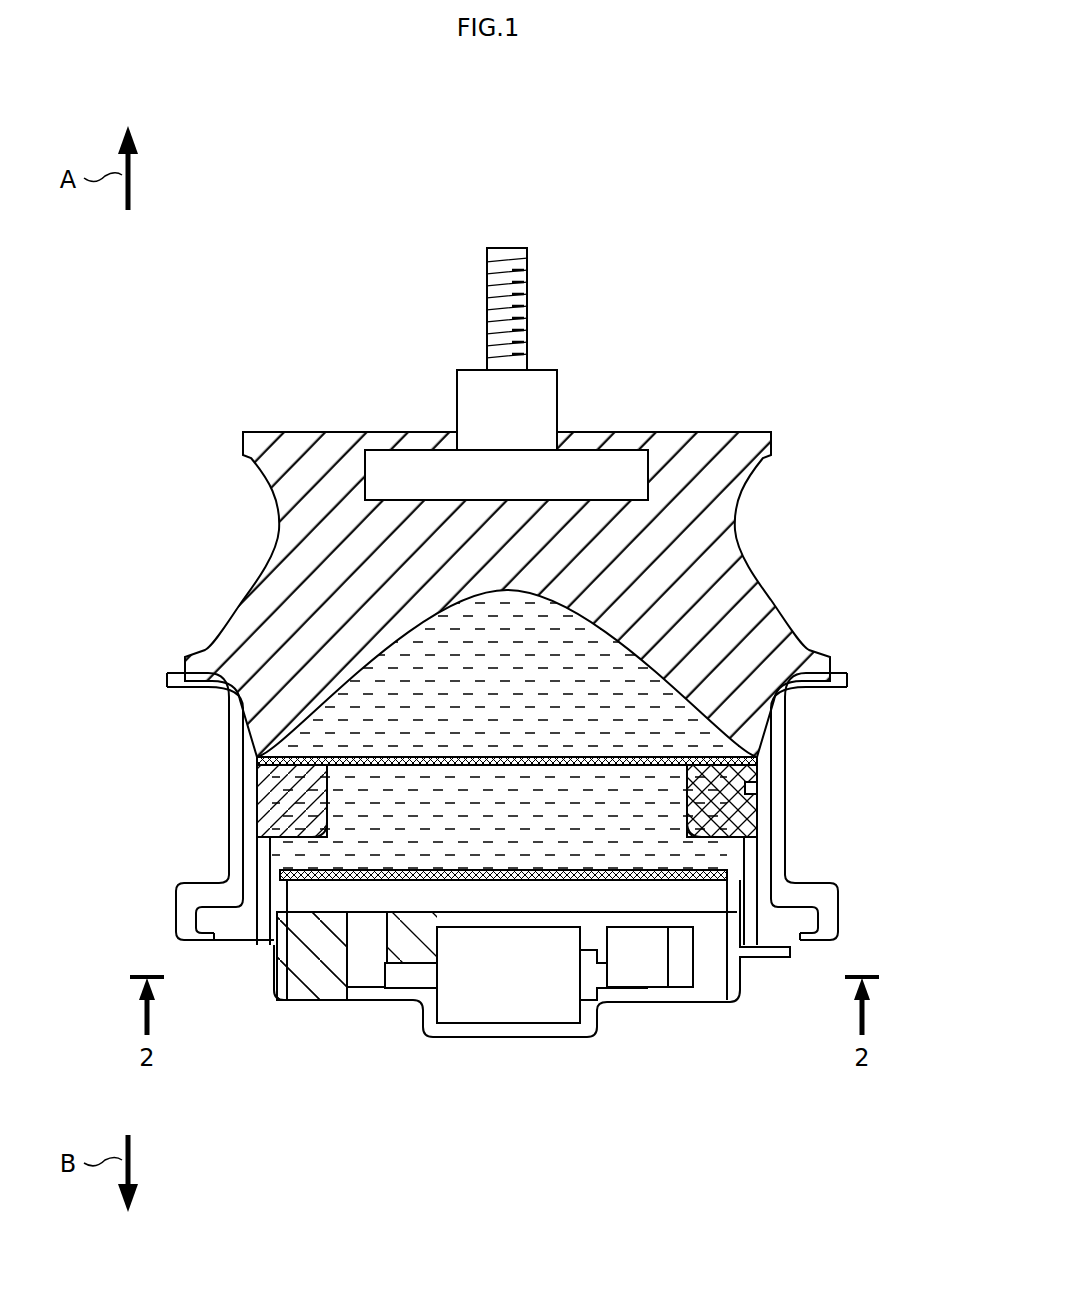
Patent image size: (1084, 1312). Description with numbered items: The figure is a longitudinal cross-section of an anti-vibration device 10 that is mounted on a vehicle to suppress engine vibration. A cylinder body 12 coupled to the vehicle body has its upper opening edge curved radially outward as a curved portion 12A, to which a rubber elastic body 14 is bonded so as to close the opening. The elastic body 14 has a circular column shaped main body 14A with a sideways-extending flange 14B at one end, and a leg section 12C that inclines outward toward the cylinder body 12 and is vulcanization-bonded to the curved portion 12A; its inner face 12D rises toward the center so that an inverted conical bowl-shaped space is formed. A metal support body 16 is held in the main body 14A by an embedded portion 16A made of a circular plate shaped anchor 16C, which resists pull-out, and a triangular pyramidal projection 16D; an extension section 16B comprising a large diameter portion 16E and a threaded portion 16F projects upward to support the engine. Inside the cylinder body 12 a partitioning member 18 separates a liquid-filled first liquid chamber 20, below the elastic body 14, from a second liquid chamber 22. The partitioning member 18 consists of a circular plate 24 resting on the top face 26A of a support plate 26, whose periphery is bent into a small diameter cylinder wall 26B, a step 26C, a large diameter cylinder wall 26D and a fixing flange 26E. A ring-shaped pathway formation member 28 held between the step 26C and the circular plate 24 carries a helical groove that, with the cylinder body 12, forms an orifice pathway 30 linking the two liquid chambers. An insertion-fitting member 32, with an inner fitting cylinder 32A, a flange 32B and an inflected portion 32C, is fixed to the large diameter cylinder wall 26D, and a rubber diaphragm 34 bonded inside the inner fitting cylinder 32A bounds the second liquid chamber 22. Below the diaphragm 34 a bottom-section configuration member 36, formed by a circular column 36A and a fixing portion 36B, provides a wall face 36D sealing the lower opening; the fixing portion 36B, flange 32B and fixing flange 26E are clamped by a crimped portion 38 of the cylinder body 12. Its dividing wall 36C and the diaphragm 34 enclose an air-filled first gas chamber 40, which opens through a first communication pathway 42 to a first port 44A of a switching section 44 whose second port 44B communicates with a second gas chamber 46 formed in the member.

The anti-vibration device 10 is at (780, 158).
The cylinder body 12 is at (229, 801).
The curved portion 12A is at (185, 695).
The leg section 12C is at (267, 642).
The inner face 12D is at (393, 657).
The elastic body 14 is at (755, 557).
The main body 14A is at (693, 500).
The flange 14B is at (752, 447).
The support body 16 is at (582, 298).
The embedded portion 16A is at (262, 300).
The extension section 16B is at (500, 185).
The anchor 16C is at (388, 470).
The projection 16D is at (508, 507).
The large diameter portion 16E is at (455, 392).
The threaded portion 16F is at (487, 294).
The partitioning member 18 is at (787, 720).
The first liquid chamber 20 is at (707, 750).
The second liquid chamber 22 is at (640, 838).
The circular plate 24 is at (528, 770).
The support plate 26 is at (232, 777).
The top face 26A is at (436, 790).
The small diameter cylinder wall 26B is at (337, 807).
The step 26C is at (297, 930).
The large diameter cylinder wall 26D is at (230, 843).
The fixing flange 26E is at (240, 953).
The pathway formation member 28 is at (747, 817).
The orifice pathway 30 is at (760, 787).
The insertion-fitting member 32 is at (310, 913).
The inner fitting cylinder 32A is at (228, 870).
The flange 32B is at (267, 963).
The inflected portion 32C is at (203, 923).
The diaphragm 34 is at (693, 881).
The bottom-section configuration member 36 is at (730, 1003).
The circular column 36A is at (745, 995).
The fixing portion 36B is at (803, 943).
The dividing wall 36C is at (573, 893).
The wall face 36D is at (528, 1037).
The crimped portion 38 is at (842, 895).
The first gas chamber 40 is at (497, 987).
The first communication pathway 42 is at (363, 980).
The switching section 44 is at (517, 1056).
The first port 44A is at (407, 977).
The second port 44B is at (625, 977).
The second gas chamber 46 is at (657, 980).